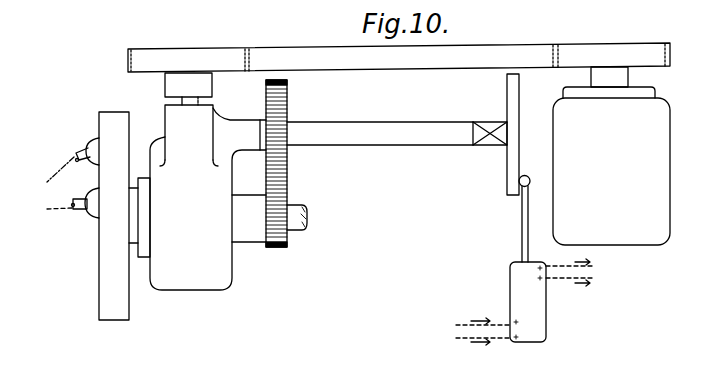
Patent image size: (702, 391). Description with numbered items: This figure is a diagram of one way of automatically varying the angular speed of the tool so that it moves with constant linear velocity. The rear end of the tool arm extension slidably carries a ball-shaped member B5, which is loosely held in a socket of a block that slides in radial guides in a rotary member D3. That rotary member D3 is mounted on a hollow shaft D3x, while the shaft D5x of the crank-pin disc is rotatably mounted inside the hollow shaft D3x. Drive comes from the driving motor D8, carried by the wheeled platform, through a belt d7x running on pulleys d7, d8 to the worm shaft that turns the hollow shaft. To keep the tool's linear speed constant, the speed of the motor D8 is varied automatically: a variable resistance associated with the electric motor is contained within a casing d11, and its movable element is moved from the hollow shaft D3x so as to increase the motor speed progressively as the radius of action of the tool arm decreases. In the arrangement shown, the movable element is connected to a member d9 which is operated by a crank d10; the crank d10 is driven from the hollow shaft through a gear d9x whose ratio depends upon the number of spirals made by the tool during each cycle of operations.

The pulley d7 is at (185, 63).
The belt d7x is at (411, 57).
The pulley d8 is at (575, 57).
The driving motor D8 is at (611, 171).
The rotary member D3 is at (112, 293).
The hollow shaft D3x is at (247, 205).
The gear d9x is at (289, 150).
The shaft D5x is at (307, 222).
The crank d10 is at (508, 185).
The member d9 is at (522, 233).
The casing d11 is at (531, 298).
The ball-shaped member B5 is at (83, 212).